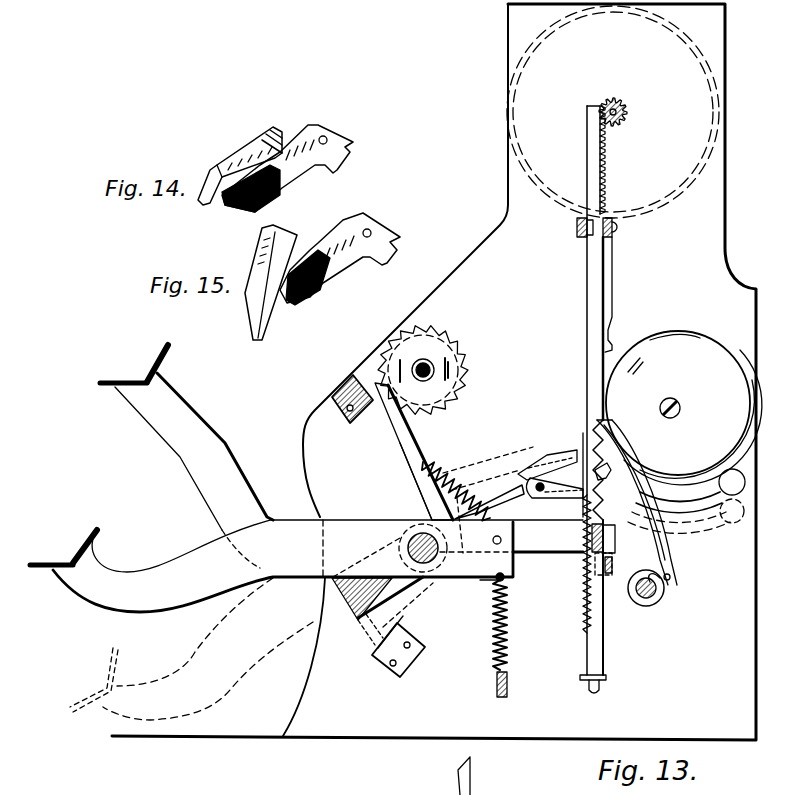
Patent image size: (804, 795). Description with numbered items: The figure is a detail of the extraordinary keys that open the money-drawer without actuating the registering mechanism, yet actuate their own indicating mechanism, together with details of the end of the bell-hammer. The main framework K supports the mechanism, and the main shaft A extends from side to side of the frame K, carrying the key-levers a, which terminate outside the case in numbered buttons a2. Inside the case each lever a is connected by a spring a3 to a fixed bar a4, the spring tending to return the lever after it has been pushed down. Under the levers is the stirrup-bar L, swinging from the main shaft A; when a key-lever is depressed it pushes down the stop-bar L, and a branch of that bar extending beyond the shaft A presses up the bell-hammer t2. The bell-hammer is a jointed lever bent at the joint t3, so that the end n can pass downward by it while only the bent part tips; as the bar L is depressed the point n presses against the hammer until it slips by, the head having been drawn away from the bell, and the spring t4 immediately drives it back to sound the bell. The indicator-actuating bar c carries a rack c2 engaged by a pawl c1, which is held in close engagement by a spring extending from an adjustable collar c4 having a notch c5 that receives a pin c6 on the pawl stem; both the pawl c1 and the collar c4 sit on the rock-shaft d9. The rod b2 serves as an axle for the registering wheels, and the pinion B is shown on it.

In FIG. 13, the pinion gear B is at (617, 98).
In FIG. 13, the main framework K is at (649, 424).
In FIG. 13, the rod b2 is at (430, 368).
In FIG. 13, the bell-hammer t2 is at (580, 446).
In FIG. 14, the bell-hammer t2 is at (240, 163).
In FIG. 15, the bell-hammer t2 is at (266, 282).
In FIG. 13, the joint t3 is at (543, 495).
In FIG. 14, the joint t3 is at (238, 215).
In FIG. 15, the joint t3 is at (300, 308).
In FIG. 13, the spring t4 is at (578, 500).
In FIG. 13, the end n is at (524, 486).
In FIG. 13, the indicator-actuating bar c is at (605, 628).
In FIG. 13, the pawl c1 is at (668, 540).
In FIG. 13, the rack c2 is at (608, 512).
In FIG. 13, the adjustable collar c4 is at (628, 590).
In FIG. 13, the notch c5 is at (650, 574).
In FIG. 13, the pin c6 is at (670, 577).
In FIG. 13, the rock-shaft d9 is at (650, 606).
In FIG. 13, the key-lever a is at (318, 492).
In FIG. 13, the button a2 is at (99, 455).
In FIG. 13, the spring a3 is at (508, 637).
In FIG. 13, the fixed bar a4 is at (508, 685).
In FIG. 13, the main shaft A is at (430, 556).
In FIG. 13, the stirrup-bar L is at (201, 649).